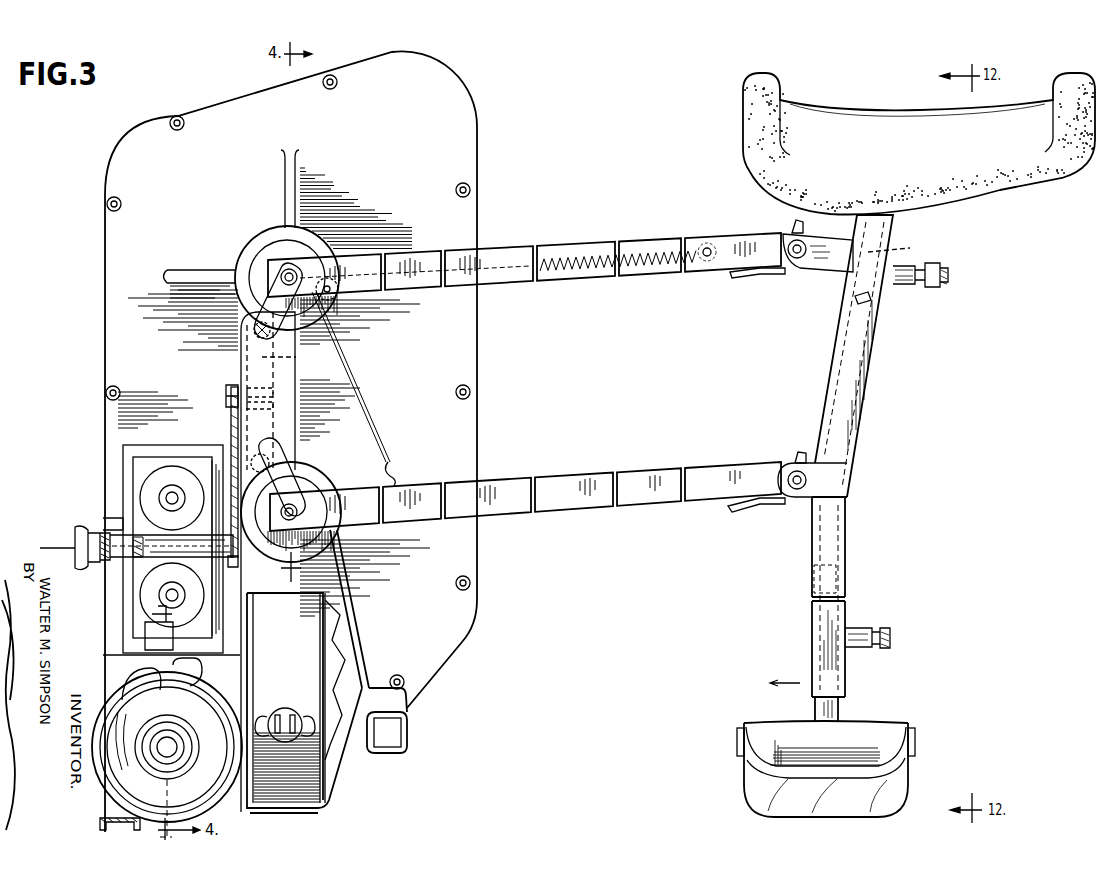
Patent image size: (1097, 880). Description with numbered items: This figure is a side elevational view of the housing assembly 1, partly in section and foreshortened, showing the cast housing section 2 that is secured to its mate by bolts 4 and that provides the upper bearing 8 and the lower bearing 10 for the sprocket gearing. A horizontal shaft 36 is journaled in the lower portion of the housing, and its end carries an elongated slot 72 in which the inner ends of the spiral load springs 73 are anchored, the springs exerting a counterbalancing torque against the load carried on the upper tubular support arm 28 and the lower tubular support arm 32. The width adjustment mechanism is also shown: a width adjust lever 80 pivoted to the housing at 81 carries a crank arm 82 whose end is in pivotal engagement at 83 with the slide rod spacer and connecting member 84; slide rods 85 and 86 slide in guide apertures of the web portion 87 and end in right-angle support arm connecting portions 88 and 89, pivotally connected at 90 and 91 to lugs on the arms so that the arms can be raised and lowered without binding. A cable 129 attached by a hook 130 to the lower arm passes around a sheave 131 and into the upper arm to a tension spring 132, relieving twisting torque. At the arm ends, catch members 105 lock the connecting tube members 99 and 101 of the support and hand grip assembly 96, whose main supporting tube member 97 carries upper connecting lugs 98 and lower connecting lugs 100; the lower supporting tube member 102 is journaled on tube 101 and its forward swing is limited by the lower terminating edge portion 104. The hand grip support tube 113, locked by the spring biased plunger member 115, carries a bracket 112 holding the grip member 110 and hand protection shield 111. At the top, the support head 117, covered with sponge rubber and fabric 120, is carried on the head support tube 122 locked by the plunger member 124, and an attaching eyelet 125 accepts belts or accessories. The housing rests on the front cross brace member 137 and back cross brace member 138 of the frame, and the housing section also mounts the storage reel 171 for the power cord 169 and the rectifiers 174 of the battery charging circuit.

The housing assembly 1 is at (82, 330).
The housing section 2 is at (228, 164).
The bolts 4 is at (182, 128).
The upper bearing 8 is at (250, 244).
The lower bearing 10 is at (312, 460).
The upper tubular support arm 28 is at (598, 246).
The lower tubular support arm 32 is at (568, 478).
The horizontal shaft 36 is at (168, 758).
The elongated slot 72 is at (176, 736).
The spiral load springs 73 is at (155, 710).
The width adjust lever 80 is at (80, 530).
The pivot 81 is at (232, 576).
The crank arm 82 is at (231, 428).
The pivotal engagement 83 is at (226, 388).
The slide rod spacer and connecting member 84 is at (265, 375).
The slide rod 85 is at (254, 334).
The slide rod 86 is at (262, 458).
The web portion 87 is at (262, 357).
The support arm connecting portion 88 is at (278, 301).
The support arm connecting portion 89 is at (282, 477).
The pivot connection 90 is at (292, 270).
The pivot connection 91 is at (298, 511).
The support and hand grip assembly 96 is at (890, 416).
The main supporting tube member 97 is at (870, 372).
The upper spaced connecting lugs 98 is at (826, 266).
The connecting tube member 99 is at (797, 262).
The lower spaced connecting lugs 100 is at (805, 458).
The connecting tube member 101 is at (797, 492).
The lower supporting tube member 102 is at (838, 522).
The lower terminating edge portion 104 is at (848, 497).
The catch member 105 is at (780, 230).
The grip member 110 is at (872, 741).
The hand protection shield 111 is at (760, 787).
The bracket 112 is at (913, 744).
The hand grip support tube 113 is at (836, 675).
The spring biased plunger member 115 is at (872, 630).
The support head 117 is at (998, 161).
The layer of sponge rubber and fabric 120 is at (830, 118).
The head support tube 122 is at (900, 249).
The spring biased plunger member 124 is at (944, 284).
The attaching eyelet 125 is at (875, 310).
The cable 129 is at (376, 412).
The hook 130 is at (398, 470).
The sheave 131 is at (333, 297).
The tension spring 132 is at (572, 280).
The front cross brace member 137 is at (408, 734).
The back cross brace member 138 is at (100, 823).
The electrical plug type lead 169 is at (288, 712).
The spring-biased storage reel 171 is at (300, 768).
The rectifiers 174 is at (184, 481).